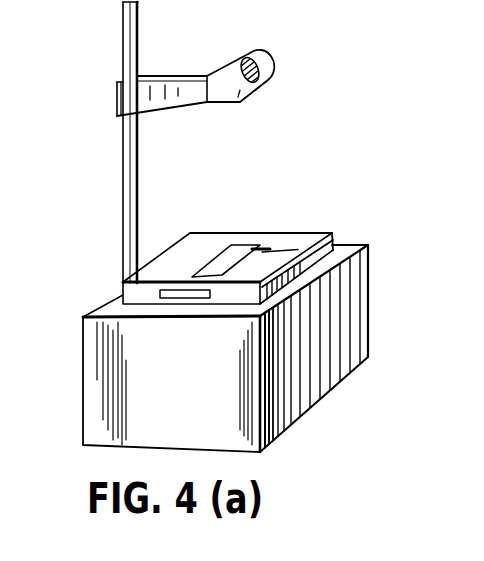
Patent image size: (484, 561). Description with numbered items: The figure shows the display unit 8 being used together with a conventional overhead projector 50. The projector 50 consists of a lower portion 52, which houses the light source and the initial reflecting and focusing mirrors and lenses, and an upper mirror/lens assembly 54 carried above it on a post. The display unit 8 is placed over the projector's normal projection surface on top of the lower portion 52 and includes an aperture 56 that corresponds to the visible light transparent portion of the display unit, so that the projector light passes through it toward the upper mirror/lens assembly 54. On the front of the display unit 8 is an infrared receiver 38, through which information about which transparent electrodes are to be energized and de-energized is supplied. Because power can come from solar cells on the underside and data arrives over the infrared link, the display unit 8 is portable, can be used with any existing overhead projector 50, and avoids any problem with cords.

The overhead projector 50 is at (74, 308).
The lower portion 52 is at (352, 279).
The upper mirror/lens assembly 54 is at (247, 55).
The aperture 56 is at (244, 253).
The display unit 8 is at (304, 243).
The infrared receiver 38 is at (183, 306).